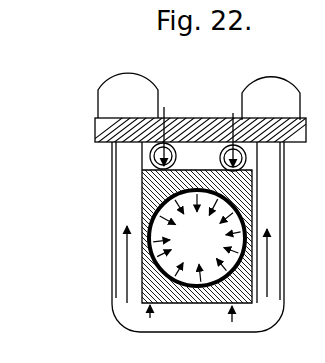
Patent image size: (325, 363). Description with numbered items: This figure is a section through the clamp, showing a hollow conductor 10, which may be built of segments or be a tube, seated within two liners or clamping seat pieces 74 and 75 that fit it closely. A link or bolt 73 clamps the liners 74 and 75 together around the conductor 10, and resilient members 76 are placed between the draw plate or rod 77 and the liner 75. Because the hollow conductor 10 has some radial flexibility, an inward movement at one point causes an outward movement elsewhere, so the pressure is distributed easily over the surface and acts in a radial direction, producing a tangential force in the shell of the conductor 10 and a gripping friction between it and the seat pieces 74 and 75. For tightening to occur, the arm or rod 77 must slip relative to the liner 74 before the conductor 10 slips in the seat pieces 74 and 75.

The conductor 10 is at (254, 242).
The link or bolt 73 is at (270, 302).
The liner 74 is at (142, 279).
The liner 75 is at (142, 184).
The resilient members 76 is at (229, 144).
The draw plate or rod 77 is at (96, 128).